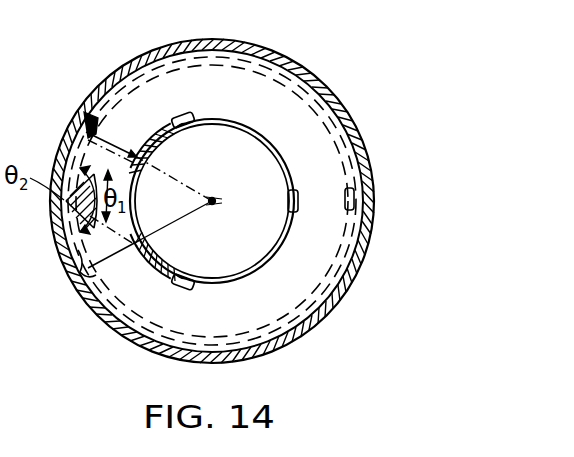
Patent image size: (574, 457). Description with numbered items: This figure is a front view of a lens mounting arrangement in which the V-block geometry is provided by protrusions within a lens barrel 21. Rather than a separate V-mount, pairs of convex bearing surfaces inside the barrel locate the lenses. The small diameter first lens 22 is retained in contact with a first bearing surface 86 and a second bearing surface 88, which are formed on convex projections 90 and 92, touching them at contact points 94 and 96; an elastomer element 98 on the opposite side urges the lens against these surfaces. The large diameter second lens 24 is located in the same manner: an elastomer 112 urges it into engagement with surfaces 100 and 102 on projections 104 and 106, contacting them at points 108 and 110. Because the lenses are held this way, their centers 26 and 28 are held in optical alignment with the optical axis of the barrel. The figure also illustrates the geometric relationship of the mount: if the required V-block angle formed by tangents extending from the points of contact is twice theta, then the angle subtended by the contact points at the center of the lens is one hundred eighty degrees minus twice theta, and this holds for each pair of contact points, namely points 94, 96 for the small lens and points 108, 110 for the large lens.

The lens barrel 21 is at (246, 40).
The first lens 22 is at (270, 198).
The second lens 24 is at (302, 252).
The center of first lens 26 is at (218, 206).
The center of second lens 28 is at (214, 199).
The first bearing surface 86 is at (192, 120).
The second bearing surface 88 is at (188, 278).
The convex projection 90 is at (176, 121).
The convex projection 92 is at (172, 272).
The contact point 94 is at (184, 128).
The contact point 96 is at (178, 264).
The elastomer element 98 is at (299, 196).
The bearing surface 100 is at (90, 131).
The bearing surface 102 is at (90, 270).
The projection 104 is at (88, 124).
The projection 106 is at (76, 270).
The contact point 108 is at (142, 160).
The contact point 110 is at (102, 263).
The elastomer 112 is at (356, 192).